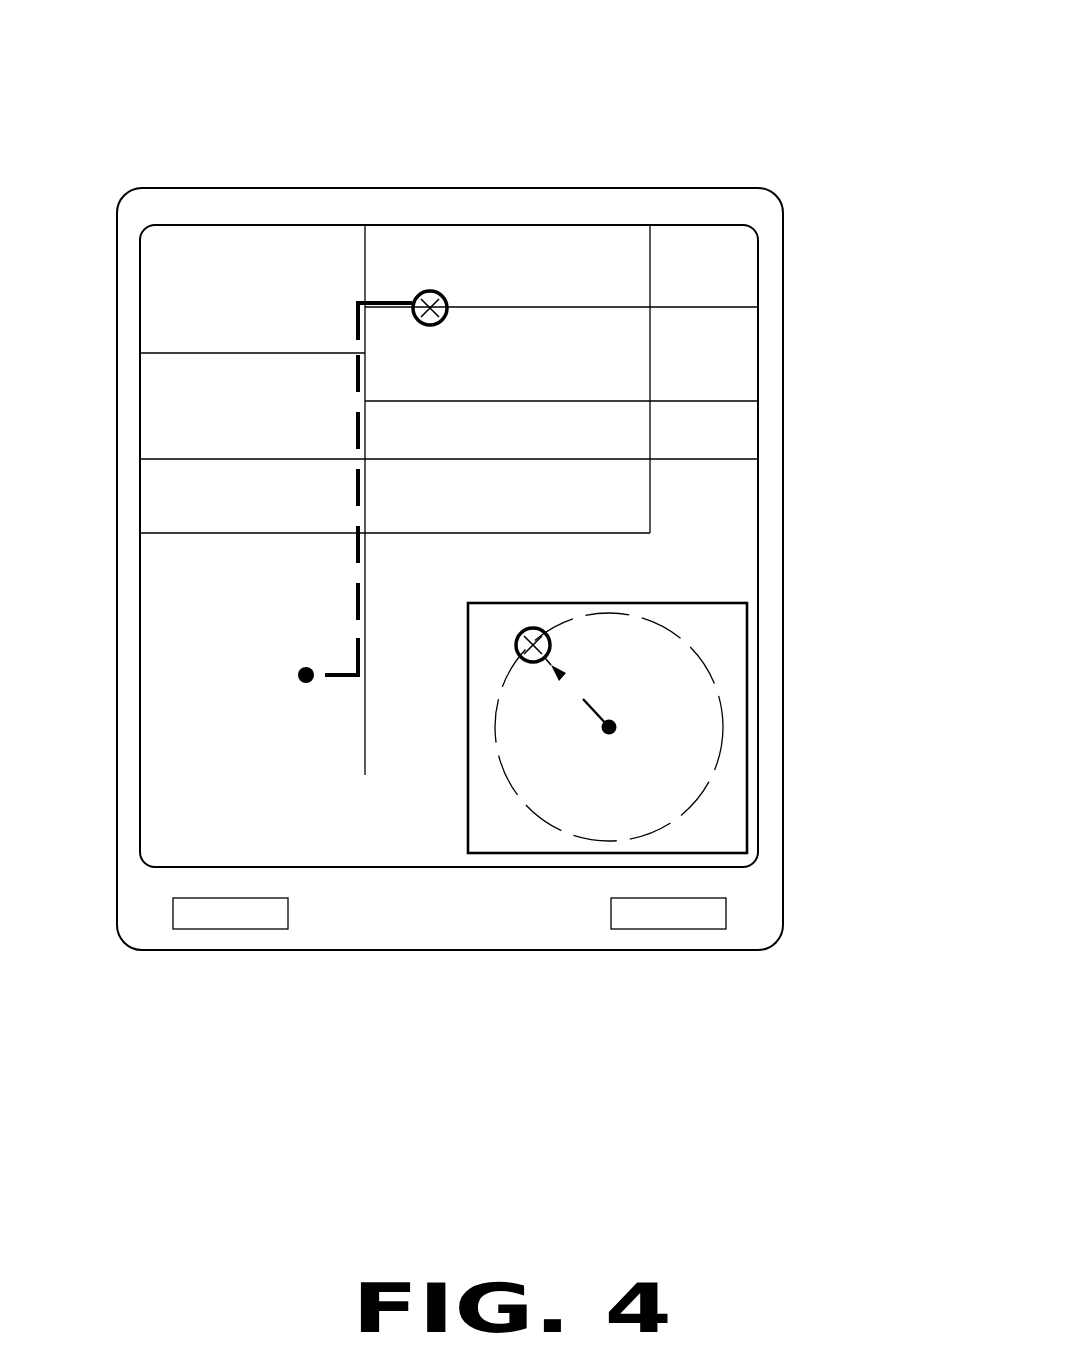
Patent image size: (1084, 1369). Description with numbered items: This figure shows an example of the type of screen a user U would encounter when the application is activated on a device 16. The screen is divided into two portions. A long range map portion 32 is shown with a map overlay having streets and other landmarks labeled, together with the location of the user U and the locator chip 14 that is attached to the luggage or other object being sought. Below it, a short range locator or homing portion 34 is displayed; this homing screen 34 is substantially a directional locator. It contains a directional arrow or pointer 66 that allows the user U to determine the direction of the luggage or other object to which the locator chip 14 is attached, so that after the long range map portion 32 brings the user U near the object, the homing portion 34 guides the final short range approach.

The mobile device 16 is at (229, 189).
The long range map portion 32 is at (617, 258).
The locator chip 14 is at (428, 291).
The short range locator or homing portion 34 is at (688, 703).
The directional arrow or pointer 66 is at (565, 680).
The user U is at (306, 675).